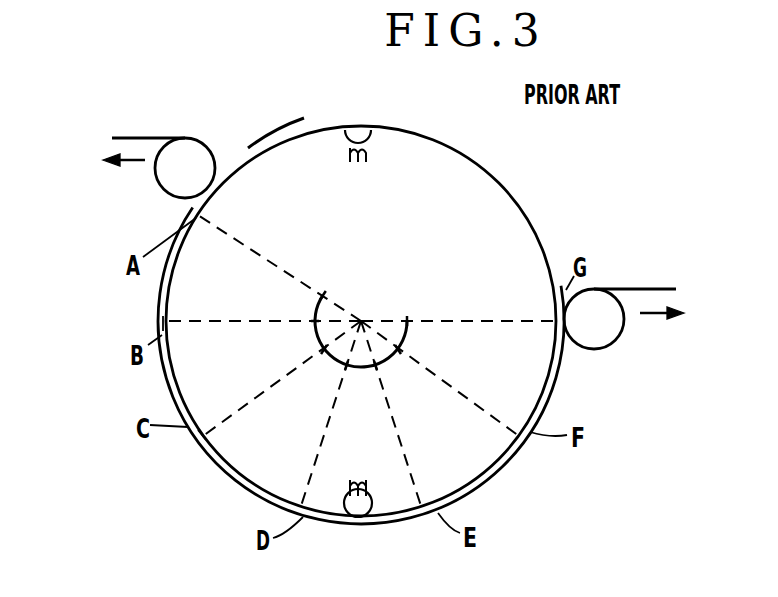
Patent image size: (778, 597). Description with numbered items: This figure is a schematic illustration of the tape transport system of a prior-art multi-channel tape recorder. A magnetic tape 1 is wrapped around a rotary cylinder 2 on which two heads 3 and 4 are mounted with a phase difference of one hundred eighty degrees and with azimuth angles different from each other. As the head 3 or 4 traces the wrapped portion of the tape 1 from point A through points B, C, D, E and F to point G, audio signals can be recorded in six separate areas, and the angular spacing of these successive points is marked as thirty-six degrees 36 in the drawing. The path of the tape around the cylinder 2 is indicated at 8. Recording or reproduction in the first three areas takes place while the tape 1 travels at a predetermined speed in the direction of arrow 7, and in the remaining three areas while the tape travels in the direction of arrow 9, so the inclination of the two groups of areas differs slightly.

The magnetic tape 1 is at (626, 290).
The rotary cylinder 2 is at (532, 242).
The head 3 is at (372, 150).
The head 4 is at (371, 497).
The arrow 7 is at (648, 318).
The belt 8 is at (252, 147).
The arrow 9 is at (134, 165).
The 36 degree angular spacing 36 is at (318, 303).